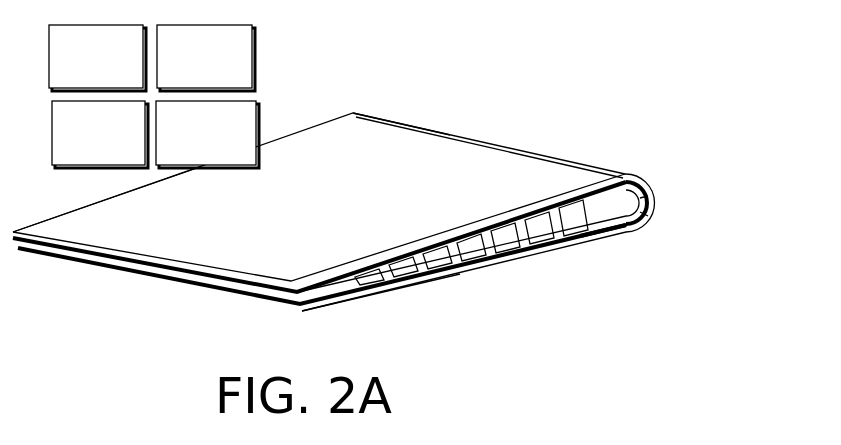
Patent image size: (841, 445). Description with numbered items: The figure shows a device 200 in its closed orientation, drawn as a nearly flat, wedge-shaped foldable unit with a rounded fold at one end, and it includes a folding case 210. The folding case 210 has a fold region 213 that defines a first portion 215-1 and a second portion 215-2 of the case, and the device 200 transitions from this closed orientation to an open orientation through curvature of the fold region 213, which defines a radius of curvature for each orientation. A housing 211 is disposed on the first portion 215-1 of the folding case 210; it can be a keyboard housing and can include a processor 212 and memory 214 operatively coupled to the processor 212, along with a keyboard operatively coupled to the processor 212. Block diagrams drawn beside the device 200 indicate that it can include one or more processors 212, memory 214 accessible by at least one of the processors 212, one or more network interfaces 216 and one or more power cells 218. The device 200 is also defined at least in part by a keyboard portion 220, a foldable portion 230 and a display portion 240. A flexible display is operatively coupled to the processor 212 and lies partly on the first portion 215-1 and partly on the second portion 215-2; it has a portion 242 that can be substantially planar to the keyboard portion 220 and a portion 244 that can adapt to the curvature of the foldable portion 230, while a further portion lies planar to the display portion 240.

The device 200 is at (534, 61).
The folding case 210 is at (517, 160).
The housing 211 is at (377, 298).
The processor 212 is at (97, 58).
The fold region 213 is at (655, 166).
The memory 214 is at (206, 58).
The first portion 215-1 is at (535, 291).
The second portion 215-2 is at (410, 104).
The network interface 216 is at (100, 134).
The power cell 218 is at (207, 134).
The keyboard portion 220 is at (397, 283).
The foldable portion 230 is at (643, 213).
The display portion 240 is at (588, 175).
The portion of the display 242 is at (590, 222).
The portion of the display 244 is at (633, 200).